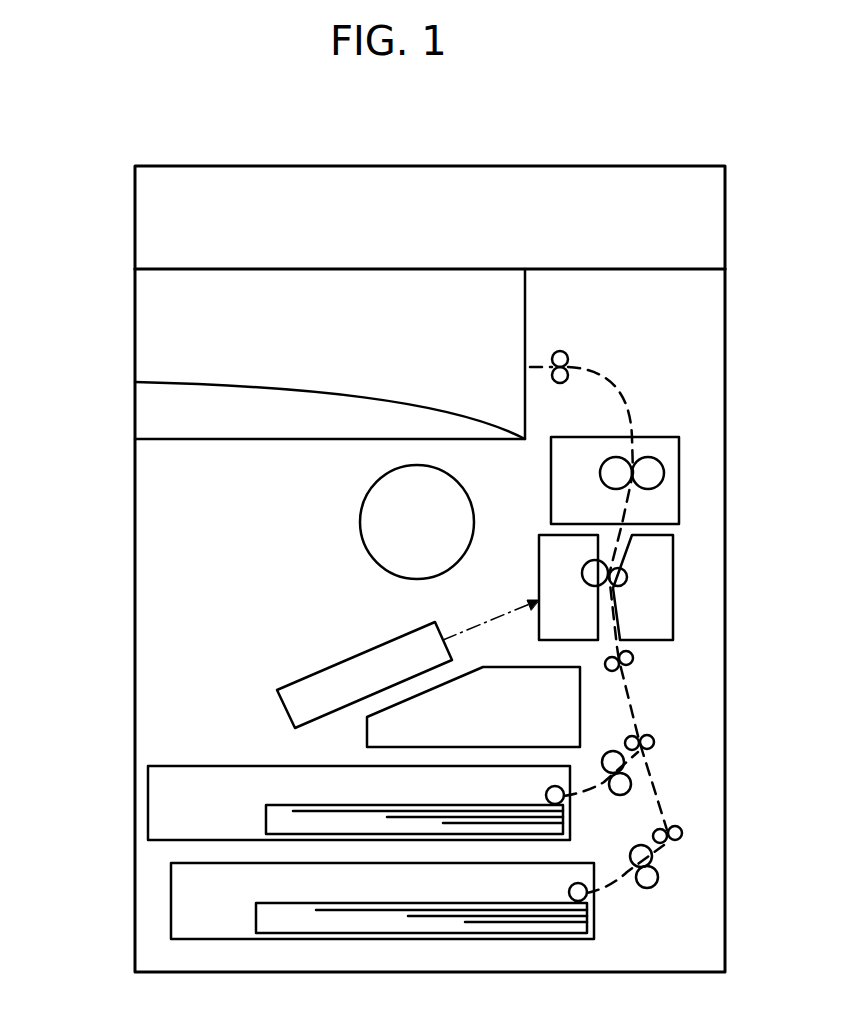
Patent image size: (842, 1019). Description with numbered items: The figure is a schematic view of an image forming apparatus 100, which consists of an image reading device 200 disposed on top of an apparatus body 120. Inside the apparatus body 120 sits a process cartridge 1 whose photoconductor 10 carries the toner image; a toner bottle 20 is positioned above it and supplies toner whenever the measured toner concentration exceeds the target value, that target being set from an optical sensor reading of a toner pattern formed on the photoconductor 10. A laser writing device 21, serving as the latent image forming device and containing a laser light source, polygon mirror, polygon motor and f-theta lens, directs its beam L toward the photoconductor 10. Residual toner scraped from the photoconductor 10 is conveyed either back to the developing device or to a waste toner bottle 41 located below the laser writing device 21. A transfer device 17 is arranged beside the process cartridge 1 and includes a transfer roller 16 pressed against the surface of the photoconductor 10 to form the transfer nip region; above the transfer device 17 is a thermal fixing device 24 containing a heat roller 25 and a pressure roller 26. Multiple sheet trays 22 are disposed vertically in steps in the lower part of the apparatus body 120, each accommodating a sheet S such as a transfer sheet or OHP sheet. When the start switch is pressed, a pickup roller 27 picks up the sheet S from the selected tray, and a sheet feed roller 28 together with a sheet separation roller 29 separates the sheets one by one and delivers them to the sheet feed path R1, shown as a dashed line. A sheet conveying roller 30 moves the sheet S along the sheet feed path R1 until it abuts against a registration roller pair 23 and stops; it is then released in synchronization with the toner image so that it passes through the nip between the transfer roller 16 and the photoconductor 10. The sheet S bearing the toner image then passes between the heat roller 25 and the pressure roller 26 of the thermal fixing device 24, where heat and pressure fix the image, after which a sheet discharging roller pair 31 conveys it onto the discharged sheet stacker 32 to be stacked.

The image forming apparatus 100 is at (662, 134).
The image reading device 200 is at (135, 222).
The apparatus body 120 is at (135, 582).
The discharged sheet stacker 32 is at (290, 387).
The sheet discharging roller pair 31 is at (563, 350).
The thermal fixing device 24 is at (657, 438).
The heat roller 25 is at (600, 476).
The pressure roller 26 is at (665, 473).
The process cartridge 1 is at (539, 556).
The photoconductor 10 is at (588, 586).
The transfer roller 16 is at (625, 587).
The transfer device 17 is at (673, 583).
The toner bottle 20 is at (360, 523).
The laser writing device 21 is at (338, 662).
The laser beam L is at (497, 617).
The waste toner bottle 41 is at (367, 730).
The registration roller pair 23 is at (633, 665).
The sheet feed roller 28 is at (607, 751).
The sheet separation roller 29 is at (623, 795).
The sheet conveying roller 30 is at (655, 742).
The pickup roller 27 is at (546, 794).
The sheet trays 22 is at (148, 800).
The sheet S is at (333, 807).
The sheet feed path R1 is at (665, 806).